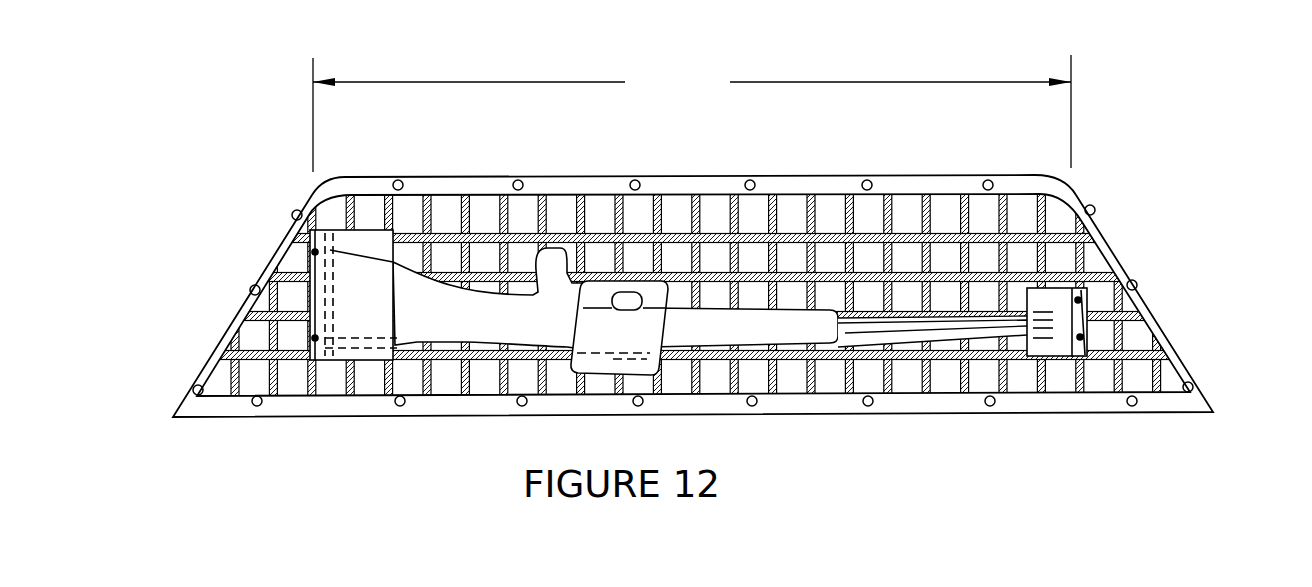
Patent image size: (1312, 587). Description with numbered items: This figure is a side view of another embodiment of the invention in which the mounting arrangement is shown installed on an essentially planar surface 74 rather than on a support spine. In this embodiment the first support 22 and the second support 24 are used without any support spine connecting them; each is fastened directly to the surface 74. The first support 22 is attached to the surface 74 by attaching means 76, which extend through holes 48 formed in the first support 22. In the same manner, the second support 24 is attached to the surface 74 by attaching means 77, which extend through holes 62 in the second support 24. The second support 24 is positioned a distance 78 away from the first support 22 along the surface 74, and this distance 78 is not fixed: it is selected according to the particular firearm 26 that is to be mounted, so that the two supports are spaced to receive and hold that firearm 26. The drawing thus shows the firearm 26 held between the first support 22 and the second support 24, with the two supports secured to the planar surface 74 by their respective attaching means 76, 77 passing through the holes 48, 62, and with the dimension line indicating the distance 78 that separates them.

The first support 22 is at (310, 303).
The second support 24 is at (1088, 333).
The firearm 26 is at (458, 317).
The holes 48 is at (330, 345).
The holes 62 is at (1080, 337).
The essentially planar surface 74 is at (693, 255).
The attaching means 76 is at (290, 423).
The attaching means 77 is at (1247, 383).
The distance 78 is at (692, 112).